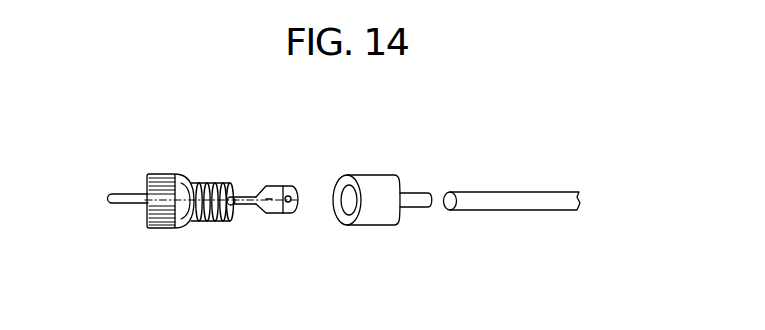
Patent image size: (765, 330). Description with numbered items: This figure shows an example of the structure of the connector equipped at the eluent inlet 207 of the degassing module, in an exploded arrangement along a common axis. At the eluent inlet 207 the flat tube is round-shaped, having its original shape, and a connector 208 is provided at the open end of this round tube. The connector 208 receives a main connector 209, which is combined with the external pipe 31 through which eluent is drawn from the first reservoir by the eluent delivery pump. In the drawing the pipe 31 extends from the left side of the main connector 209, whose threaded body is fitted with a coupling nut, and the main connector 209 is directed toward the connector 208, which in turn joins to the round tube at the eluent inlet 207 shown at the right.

The pipe 31 is at (117, 203).
The main connector 209 is at (204, 169).
The connector 208 is at (343, 223).
The eluent inlet 207 is at (507, 209).